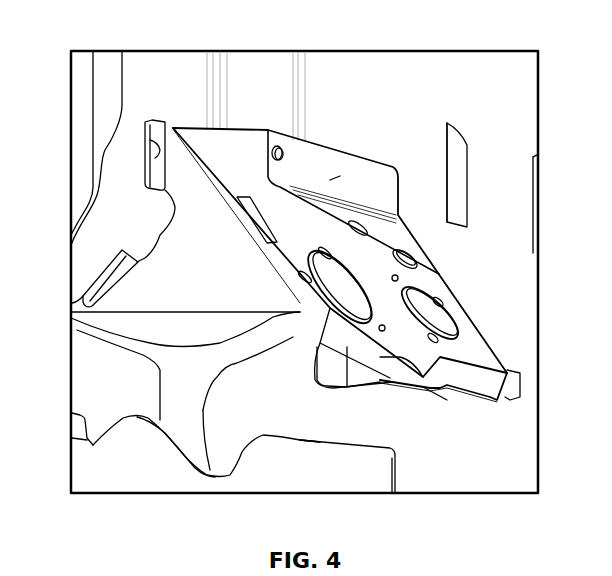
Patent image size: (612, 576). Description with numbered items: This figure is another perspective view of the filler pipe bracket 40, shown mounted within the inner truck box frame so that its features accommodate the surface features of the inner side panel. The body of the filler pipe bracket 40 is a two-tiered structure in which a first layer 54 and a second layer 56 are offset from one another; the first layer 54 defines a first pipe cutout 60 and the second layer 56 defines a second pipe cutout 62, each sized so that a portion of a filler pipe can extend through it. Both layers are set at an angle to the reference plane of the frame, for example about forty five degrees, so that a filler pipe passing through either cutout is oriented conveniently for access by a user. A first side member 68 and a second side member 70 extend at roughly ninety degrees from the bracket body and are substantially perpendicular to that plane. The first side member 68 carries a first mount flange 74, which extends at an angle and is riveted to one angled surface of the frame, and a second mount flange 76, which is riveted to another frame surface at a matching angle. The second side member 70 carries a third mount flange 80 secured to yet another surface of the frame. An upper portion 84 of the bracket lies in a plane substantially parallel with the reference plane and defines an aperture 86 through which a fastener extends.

The filler pipe bracket 40 is at (185, 118).
The aperture 86 is at (280, 147).
The upper portion 84 is at (327, 177).
The first layer 54 is at (380, 240).
The second mount flange 76 is at (150, 163).
The first mount flange 74 is at (103, 308).
The first side member 68 is at (160, 290).
The second layer 56 is at (320, 350).
The third mount flange 80 is at (340, 367).
The second pipe cutout 62 is at (380, 373).
The second side member 70 is at (395, 378).
The first pipe cutout 60 is at (458, 328).